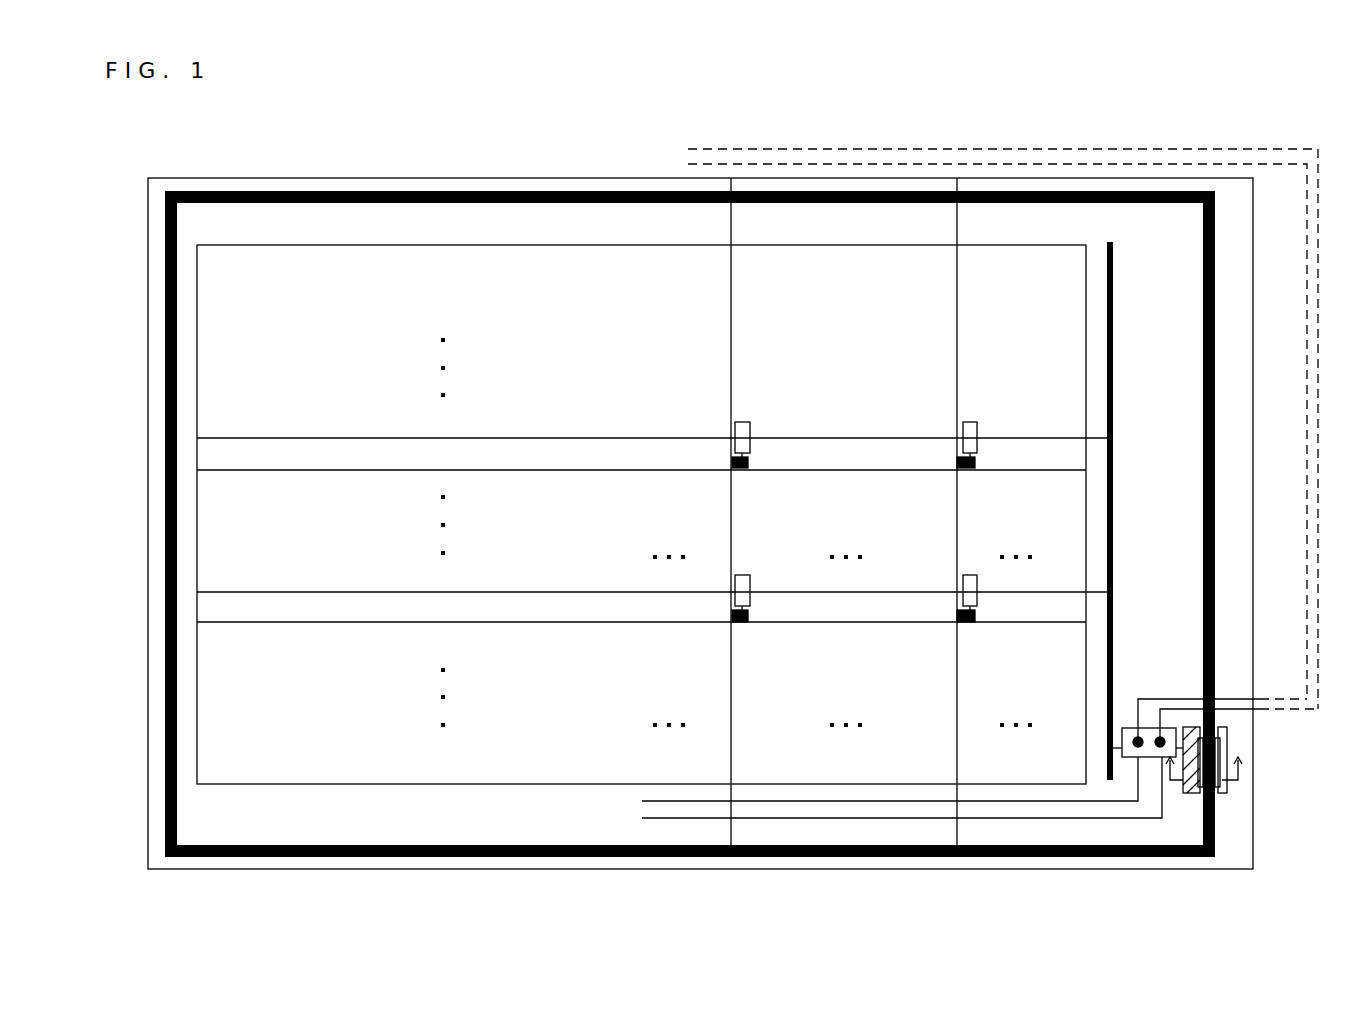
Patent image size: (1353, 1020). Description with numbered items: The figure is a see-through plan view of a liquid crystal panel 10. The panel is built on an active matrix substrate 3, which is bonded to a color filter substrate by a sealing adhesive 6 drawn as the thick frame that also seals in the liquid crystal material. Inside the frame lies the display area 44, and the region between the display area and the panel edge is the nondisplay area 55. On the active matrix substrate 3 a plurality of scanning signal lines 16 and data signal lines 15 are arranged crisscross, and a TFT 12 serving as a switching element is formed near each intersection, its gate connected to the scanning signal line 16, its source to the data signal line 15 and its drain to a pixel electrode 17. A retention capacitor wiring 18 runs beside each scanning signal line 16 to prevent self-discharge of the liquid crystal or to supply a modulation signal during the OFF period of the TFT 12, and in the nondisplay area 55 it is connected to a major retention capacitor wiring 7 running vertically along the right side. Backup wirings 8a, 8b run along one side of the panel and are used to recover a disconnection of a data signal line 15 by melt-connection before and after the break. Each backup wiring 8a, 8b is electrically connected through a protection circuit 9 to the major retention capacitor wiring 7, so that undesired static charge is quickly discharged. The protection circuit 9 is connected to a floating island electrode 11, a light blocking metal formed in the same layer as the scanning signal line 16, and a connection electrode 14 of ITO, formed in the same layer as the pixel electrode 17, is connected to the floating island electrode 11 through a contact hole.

The liquid crystal panel 10 is at (608, 165).
The active matrix substrate 3 is at (474, 178).
The sealing adhesive 6 is at (1215, 438).
The nondisplay area 55 is at (285, 225).
The display area 44 is at (565, 245).
The data signal line 15 is at (734, 330).
The major retention capacitor wiring 7 is at (1116, 336).
The retention capacitor wiring 18 is at (331, 438).
The scanning signal line 16 is at (355, 470).
The pixel electrode 17 is at (748, 422).
The TFT 12 is at (750, 463).
The protection circuit 9 is at (1130, 728).
The floating island electrode 11 is at (1230, 728).
The connection electrode 14 is at (1230, 753).
The backup wiring 8a is at (642, 801).
The backup wiring 8b is at (642, 818).